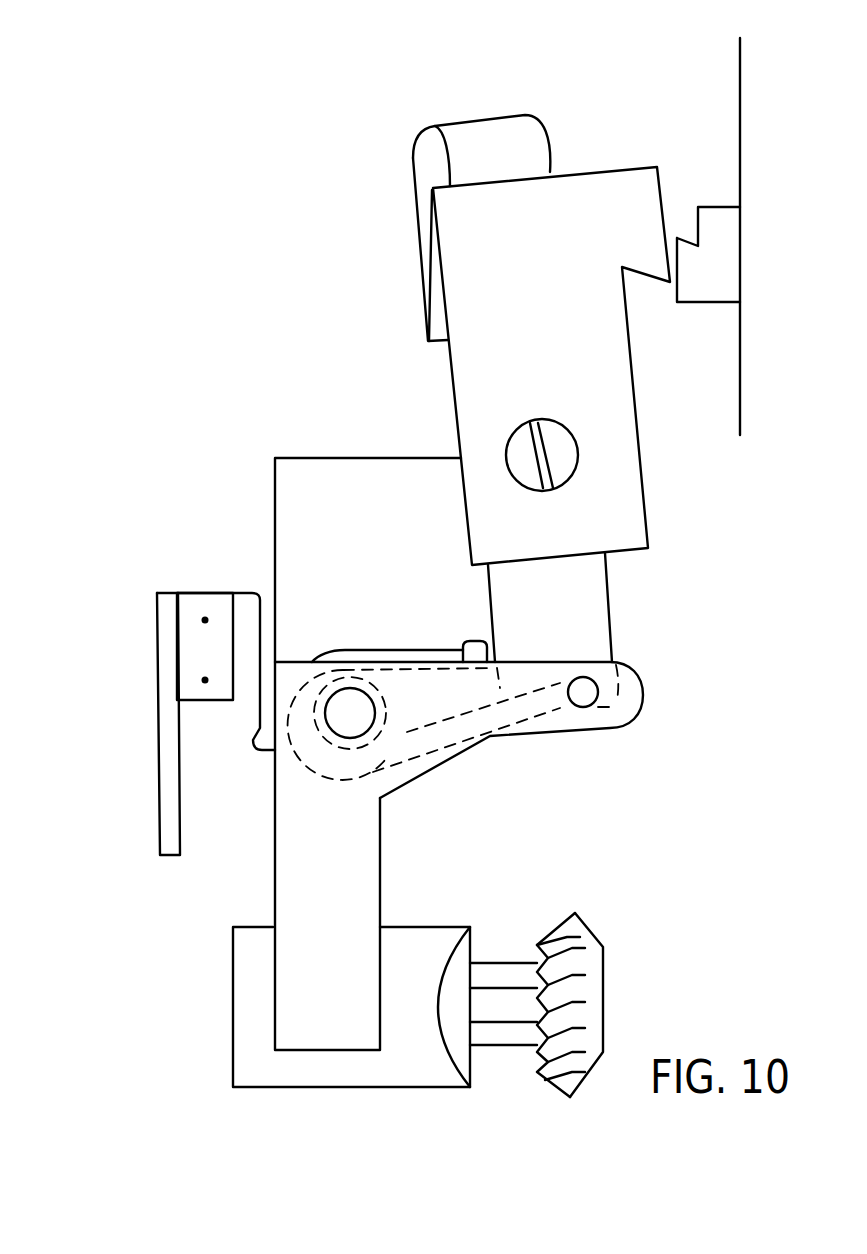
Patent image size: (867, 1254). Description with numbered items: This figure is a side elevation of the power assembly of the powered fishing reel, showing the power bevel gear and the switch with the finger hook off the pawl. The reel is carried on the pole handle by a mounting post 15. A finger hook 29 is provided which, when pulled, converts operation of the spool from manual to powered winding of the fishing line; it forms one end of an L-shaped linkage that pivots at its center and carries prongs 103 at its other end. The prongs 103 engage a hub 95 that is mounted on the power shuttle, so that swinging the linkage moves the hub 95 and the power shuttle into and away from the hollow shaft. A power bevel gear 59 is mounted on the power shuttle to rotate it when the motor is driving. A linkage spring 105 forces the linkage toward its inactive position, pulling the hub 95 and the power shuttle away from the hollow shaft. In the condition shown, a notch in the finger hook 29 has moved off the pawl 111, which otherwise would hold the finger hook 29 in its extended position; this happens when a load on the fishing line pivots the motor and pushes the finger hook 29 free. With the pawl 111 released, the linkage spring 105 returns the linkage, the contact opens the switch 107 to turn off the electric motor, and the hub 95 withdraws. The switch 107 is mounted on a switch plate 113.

The mounting post 15 is at (757, 72).
The finger hook 29 is at (423, 160).
The pawl 111 is at (720, 222).
The switch 107 is at (208, 602).
The switch plate 113 is at (165, 707).
The linkage spring 105 is at (413, 658).
The prongs 103 is at (350, 845).
The hub 95 is at (420, 937).
The power bevel gear 59 is at (585, 940).